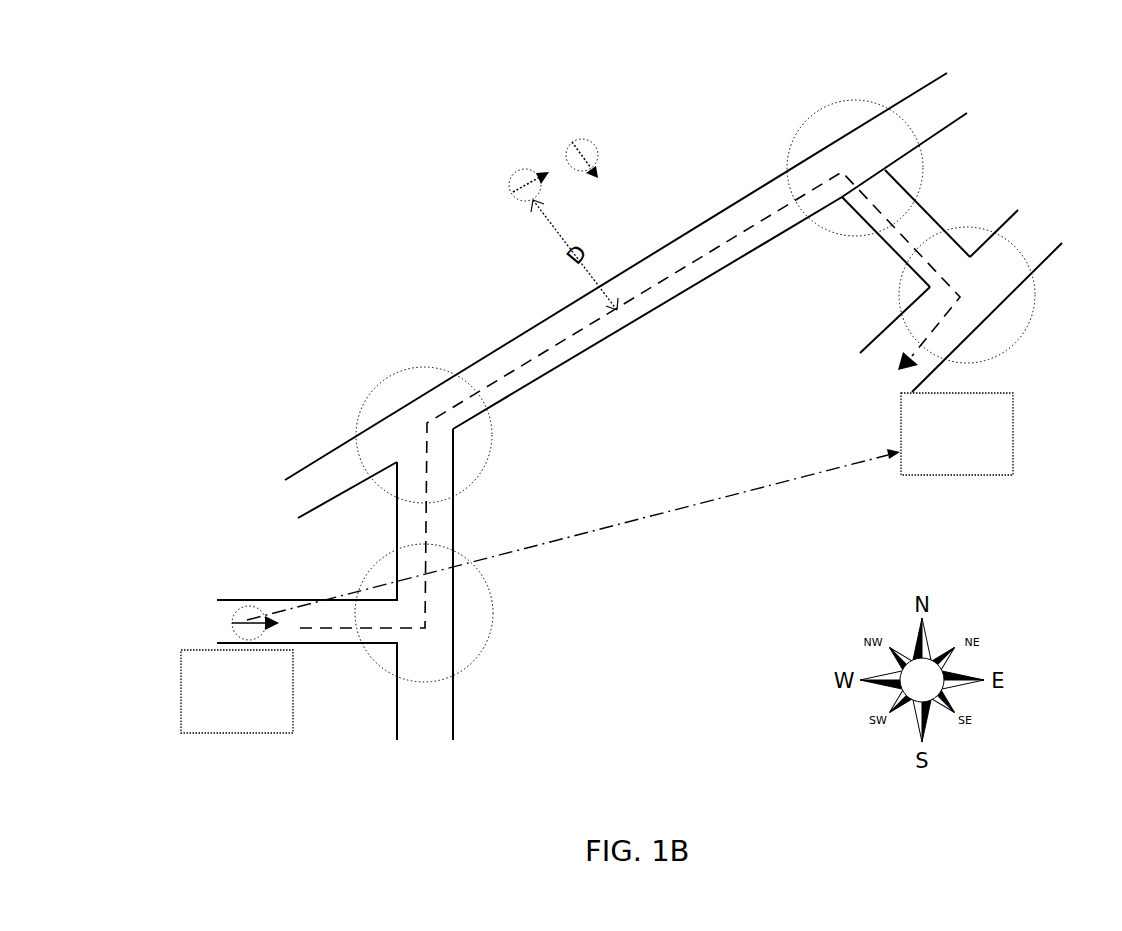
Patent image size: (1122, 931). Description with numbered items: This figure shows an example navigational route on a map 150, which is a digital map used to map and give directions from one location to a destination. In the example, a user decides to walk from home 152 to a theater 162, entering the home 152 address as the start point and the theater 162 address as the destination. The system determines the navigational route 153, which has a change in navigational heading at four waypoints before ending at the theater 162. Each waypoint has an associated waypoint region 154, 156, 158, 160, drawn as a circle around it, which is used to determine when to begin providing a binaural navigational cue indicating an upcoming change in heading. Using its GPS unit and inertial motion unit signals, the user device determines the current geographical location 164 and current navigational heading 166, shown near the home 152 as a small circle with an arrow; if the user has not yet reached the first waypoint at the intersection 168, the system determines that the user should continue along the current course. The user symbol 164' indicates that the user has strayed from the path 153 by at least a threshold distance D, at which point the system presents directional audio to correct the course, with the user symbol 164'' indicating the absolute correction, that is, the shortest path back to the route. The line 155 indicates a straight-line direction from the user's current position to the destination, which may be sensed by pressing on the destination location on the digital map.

The map 150 is at (167, 120).
The home 152 is at (257, 733).
The navigational route 153 is at (600, 320).
The waypoint region 154 is at (467, 670).
The line 155 is at (653, 515).
The waypoint region 156 is at (403, 368).
The waypoint region 158 is at (835, 100).
The waypoint region 160 is at (965, 227).
The theater 162 is at (960, 475).
The current geographical location 164 is at (260, 601).
The user symbol 164' is at (526, 162).
The user symbol 164'' is at (578, 134).
The current navigational heading 166 is at (271, 618).
The intersection 168 is at (397, 598).